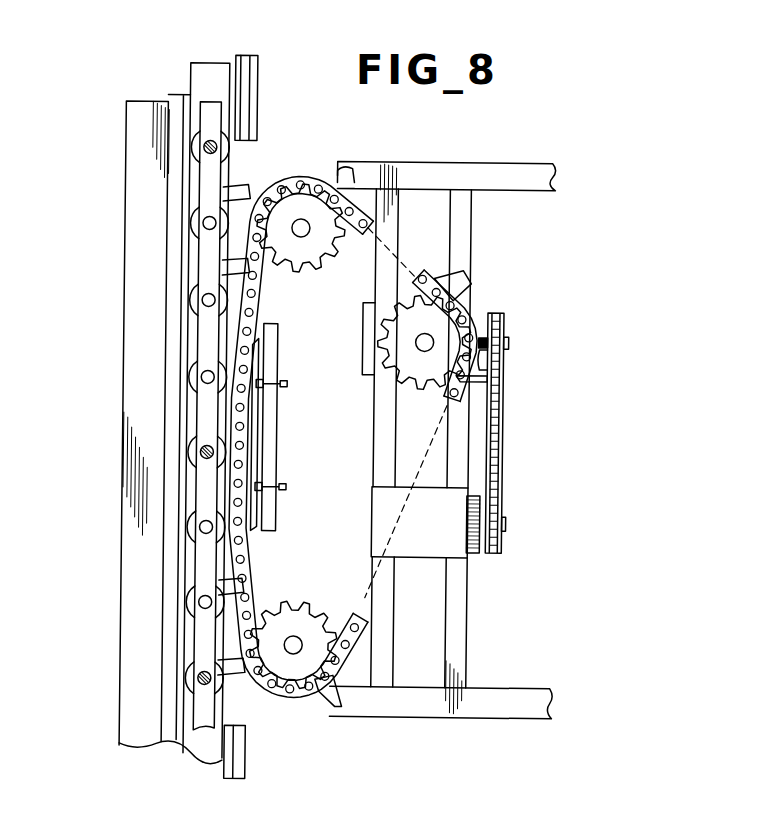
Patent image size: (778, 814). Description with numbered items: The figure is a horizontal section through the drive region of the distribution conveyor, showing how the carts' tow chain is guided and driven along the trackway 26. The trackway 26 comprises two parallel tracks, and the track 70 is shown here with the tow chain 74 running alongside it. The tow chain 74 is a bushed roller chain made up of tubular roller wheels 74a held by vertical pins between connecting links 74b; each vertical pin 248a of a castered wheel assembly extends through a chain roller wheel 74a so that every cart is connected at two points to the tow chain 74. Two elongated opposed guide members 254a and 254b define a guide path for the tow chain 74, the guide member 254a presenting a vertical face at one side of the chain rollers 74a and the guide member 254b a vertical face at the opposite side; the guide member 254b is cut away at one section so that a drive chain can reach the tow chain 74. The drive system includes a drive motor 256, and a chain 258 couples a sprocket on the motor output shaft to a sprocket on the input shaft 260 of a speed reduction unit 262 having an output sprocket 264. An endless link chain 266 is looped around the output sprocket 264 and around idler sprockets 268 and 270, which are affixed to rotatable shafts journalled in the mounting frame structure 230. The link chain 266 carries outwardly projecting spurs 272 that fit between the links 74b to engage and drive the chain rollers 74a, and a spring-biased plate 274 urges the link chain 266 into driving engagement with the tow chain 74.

The trackway 26 is at (183, 78).
The track 70 is at (203, 66).
The tow chain 74 is at (196, 278).
The roller wheels 74a is at (196, 226).
The connecting links 74b is at (196, 189).
The vertical pin 248a is at (197, 152).
The guide member 254a is at (174, 118).
The guide member 254b is at (246, 100).
The frame beam 230 is at (430, 162).
The drive motor 256 is at (401, 537).
The chain 258 is at (500, 428).
The input shaft 260 is at (508, 340).
The speed reduction unit 262 is at (377, 341).
The output sprocket 264 is at (396, 357).
The endless link chain 266 is at (252, 317).
The idler sprocket 268 is at (286, 269).
The idler sprocket 270 is at (302, 603).
The spurs 272 is at (238, 349).
The spring-biased plate 274 is at (253, 436).